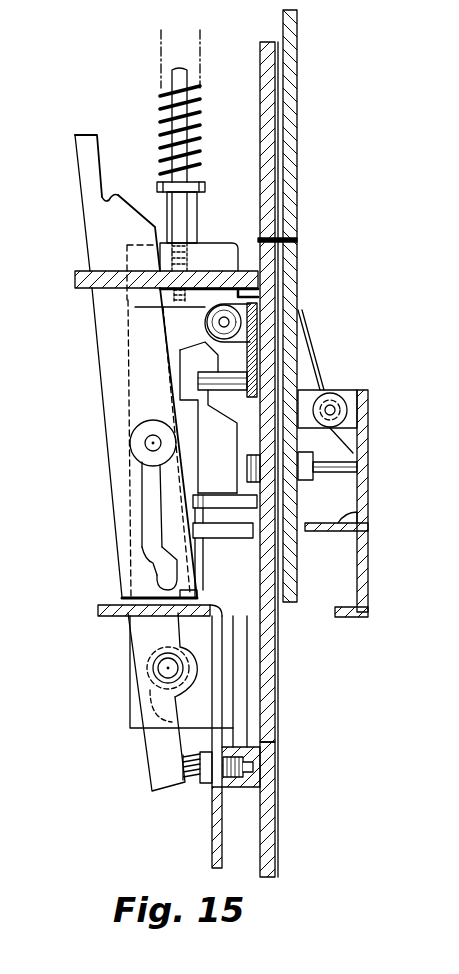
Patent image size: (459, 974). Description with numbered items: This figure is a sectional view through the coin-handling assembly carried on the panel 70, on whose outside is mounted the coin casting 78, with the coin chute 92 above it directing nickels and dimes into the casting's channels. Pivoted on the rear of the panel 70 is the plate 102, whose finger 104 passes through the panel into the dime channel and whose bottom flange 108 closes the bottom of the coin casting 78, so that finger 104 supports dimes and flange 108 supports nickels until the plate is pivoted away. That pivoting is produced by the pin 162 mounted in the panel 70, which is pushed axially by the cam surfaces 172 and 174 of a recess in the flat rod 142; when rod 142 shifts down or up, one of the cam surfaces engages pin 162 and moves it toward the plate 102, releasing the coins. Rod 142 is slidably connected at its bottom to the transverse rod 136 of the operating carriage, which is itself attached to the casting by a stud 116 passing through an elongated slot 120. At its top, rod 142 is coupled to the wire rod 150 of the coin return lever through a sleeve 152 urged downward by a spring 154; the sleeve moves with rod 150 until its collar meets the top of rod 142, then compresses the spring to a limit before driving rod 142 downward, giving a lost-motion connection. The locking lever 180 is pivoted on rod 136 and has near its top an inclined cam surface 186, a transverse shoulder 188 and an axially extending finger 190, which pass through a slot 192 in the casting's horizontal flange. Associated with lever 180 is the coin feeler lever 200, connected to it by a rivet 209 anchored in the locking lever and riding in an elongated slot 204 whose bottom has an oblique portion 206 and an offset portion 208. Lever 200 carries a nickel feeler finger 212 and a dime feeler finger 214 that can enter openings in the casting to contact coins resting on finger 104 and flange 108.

The panel 70 is at (297, 100).
The coin chute 92 is at (262, 64).
The coin casting 78 is at (273, 700).
The wire rod 150 is at (175, 72).
The spring 154 is at (200, 102).
The sleeve 152 is at (190, 206).
The finger 190 is at (88, 157).
The shoulder 188 is at (105, 202).
The cam surface 186 is at (130, 205).
The slot 192 is at (100, 270).
The coin feeler lever 200 is at (153, 392).
The cam surface 172 is at (207, 345).
The cam surface 174 is at (218, 420).
The dime feeler finger 214 is at (221, 495).
The nickel feeler finger 212 is at (228, 538).
The rivet 209 is at (140, 442).
The elongated slot 204 is at (145, 495).
The oblique portion 206 is at (141, 549).
The offset portion 208 is at (156, 572).
The pin 162 is at (330, 472).
The plate 102 is at (368, 490).
The finger 104 is at (366, 522).
The flange 108 is at (356, 617).
The elongated slot 120 is at (217, 633).
The flat rod 142 is at (138, 703).
The rod 136 is at (158, 664).
The locking lever 180 is at (155, 747).
The stud 116 is at (203, 787).